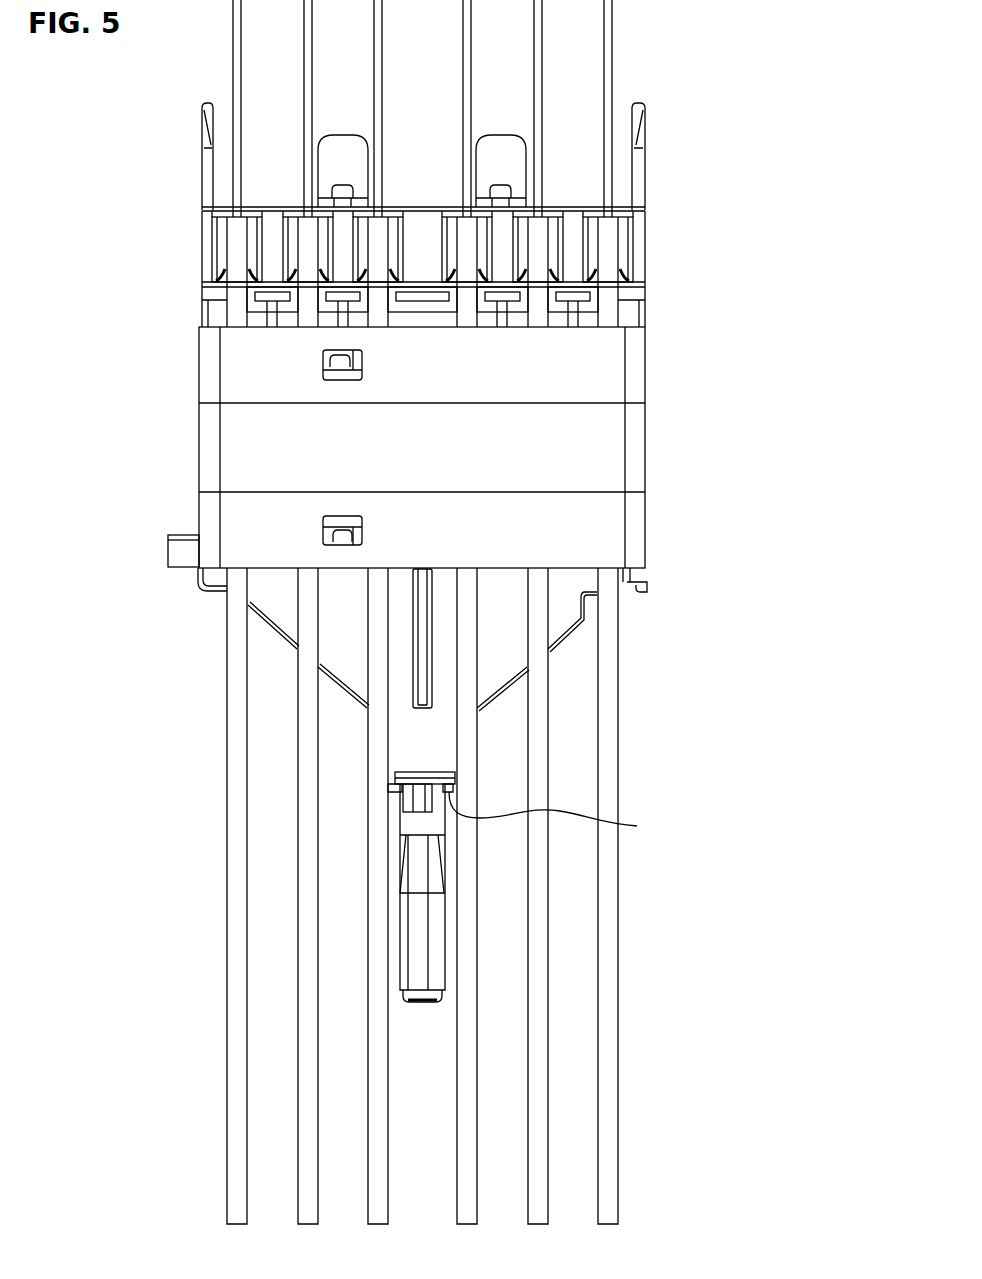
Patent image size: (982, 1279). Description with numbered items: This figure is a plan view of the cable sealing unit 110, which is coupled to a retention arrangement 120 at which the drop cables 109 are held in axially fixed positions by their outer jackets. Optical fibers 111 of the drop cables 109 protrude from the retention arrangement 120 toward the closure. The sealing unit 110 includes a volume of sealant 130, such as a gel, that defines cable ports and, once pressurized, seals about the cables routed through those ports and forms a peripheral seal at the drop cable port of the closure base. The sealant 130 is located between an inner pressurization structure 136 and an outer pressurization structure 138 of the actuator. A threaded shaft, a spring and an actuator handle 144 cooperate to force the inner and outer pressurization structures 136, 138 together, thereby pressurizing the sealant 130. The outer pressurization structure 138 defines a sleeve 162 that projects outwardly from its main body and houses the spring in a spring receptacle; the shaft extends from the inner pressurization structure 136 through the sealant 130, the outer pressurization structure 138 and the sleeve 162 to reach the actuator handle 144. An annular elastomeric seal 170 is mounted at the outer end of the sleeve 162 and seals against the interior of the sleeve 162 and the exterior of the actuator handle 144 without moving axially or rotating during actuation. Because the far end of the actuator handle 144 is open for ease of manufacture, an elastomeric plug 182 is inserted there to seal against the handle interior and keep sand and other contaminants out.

The optical fibers 111 is at (537, 38).
The retention arrangement 120 is at (648, 238).
The sealing unit 110 is at (370, 417).
The inner pressurization structure 136 is at (530, 378).
The sealant 130 is at (464, 466).
The outer pressurization structure 138 is at (530, 543).
The drop cables 109 is at (305, 886).
The sleeve 162 is at (403, 742).
The actuator handle 144 is at (282, 924).
The plug 182 is at (421, 1002).
The seal 170 is at (564, 816).